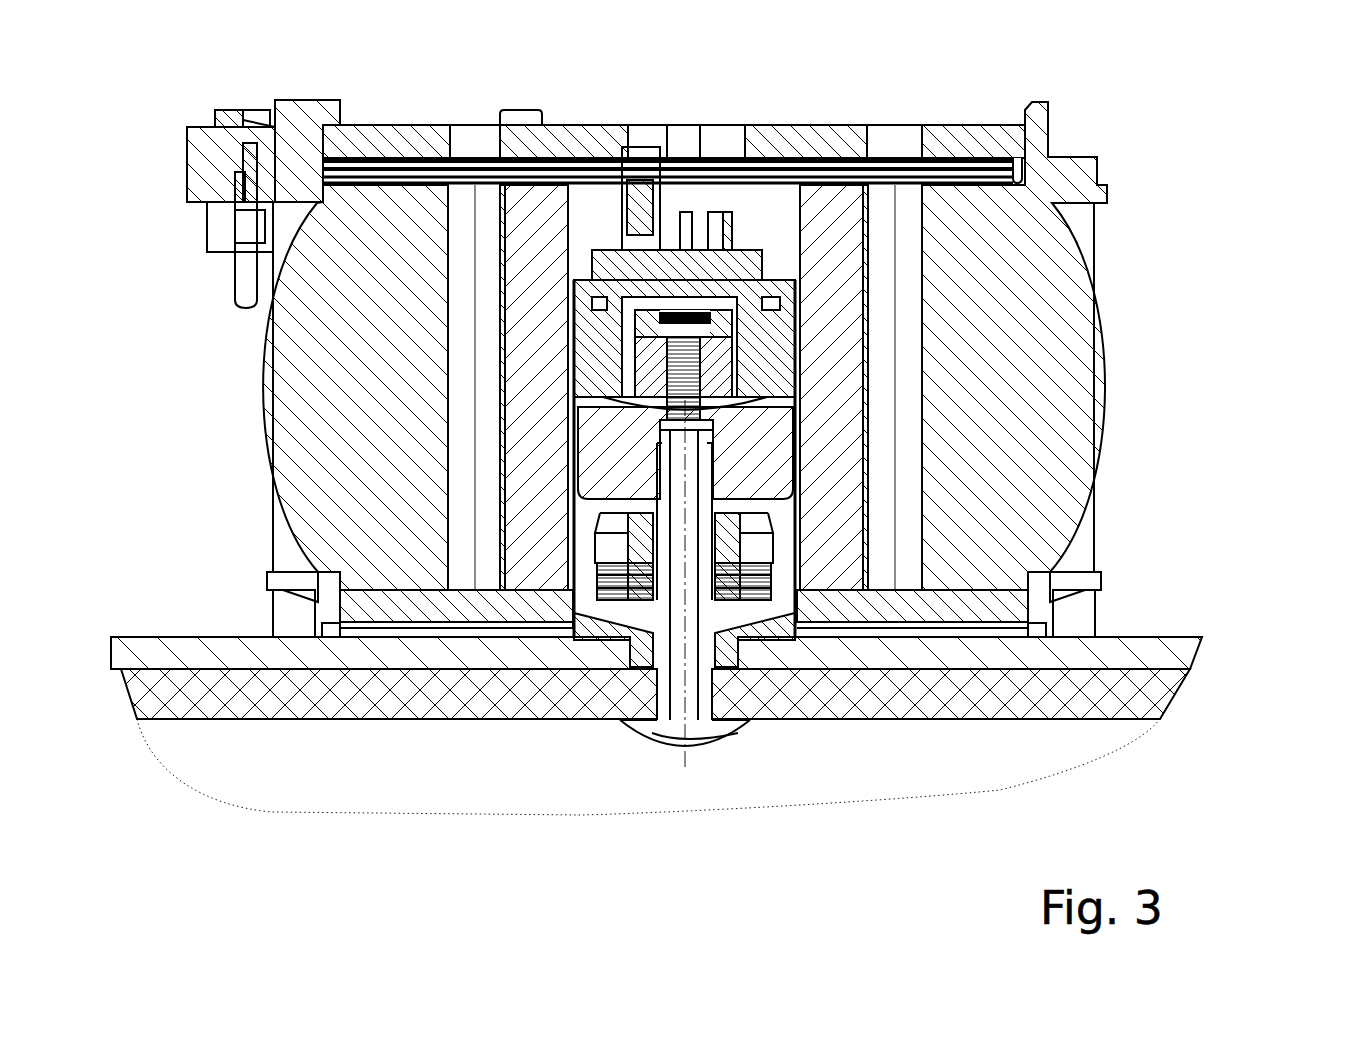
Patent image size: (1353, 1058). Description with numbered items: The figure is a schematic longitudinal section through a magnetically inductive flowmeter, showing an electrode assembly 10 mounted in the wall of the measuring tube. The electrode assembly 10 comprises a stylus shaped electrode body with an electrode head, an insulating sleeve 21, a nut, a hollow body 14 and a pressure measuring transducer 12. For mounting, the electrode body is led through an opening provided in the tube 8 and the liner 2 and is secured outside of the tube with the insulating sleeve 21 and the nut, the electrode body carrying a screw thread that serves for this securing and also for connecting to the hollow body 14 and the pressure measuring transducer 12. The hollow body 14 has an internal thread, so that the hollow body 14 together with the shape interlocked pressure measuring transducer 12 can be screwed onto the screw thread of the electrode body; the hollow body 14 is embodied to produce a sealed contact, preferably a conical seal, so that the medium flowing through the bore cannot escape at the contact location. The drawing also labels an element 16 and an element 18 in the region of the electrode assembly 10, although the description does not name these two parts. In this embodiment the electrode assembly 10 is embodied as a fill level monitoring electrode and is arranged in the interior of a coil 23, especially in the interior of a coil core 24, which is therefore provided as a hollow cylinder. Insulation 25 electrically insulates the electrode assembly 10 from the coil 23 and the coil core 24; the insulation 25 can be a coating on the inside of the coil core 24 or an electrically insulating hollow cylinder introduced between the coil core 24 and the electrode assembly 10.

The liner 2 is at (1168, 695).
The tube 8 is at (1187, 650).
The electrode assembly 10 is at (747, 755).
The pressure measuring transducer 12 is at (732, 375).
The hollow body 14 is at (775, 467).
The housing 16 is at (773, 363).
The connector pins 18 is at (686, 215).
The insulating sleeve 21 is at (628, 605).
The coil 23 is at (1045, 260).
The coil core 24 is at (838, 286).
The insulation 25 is at (794, 302).